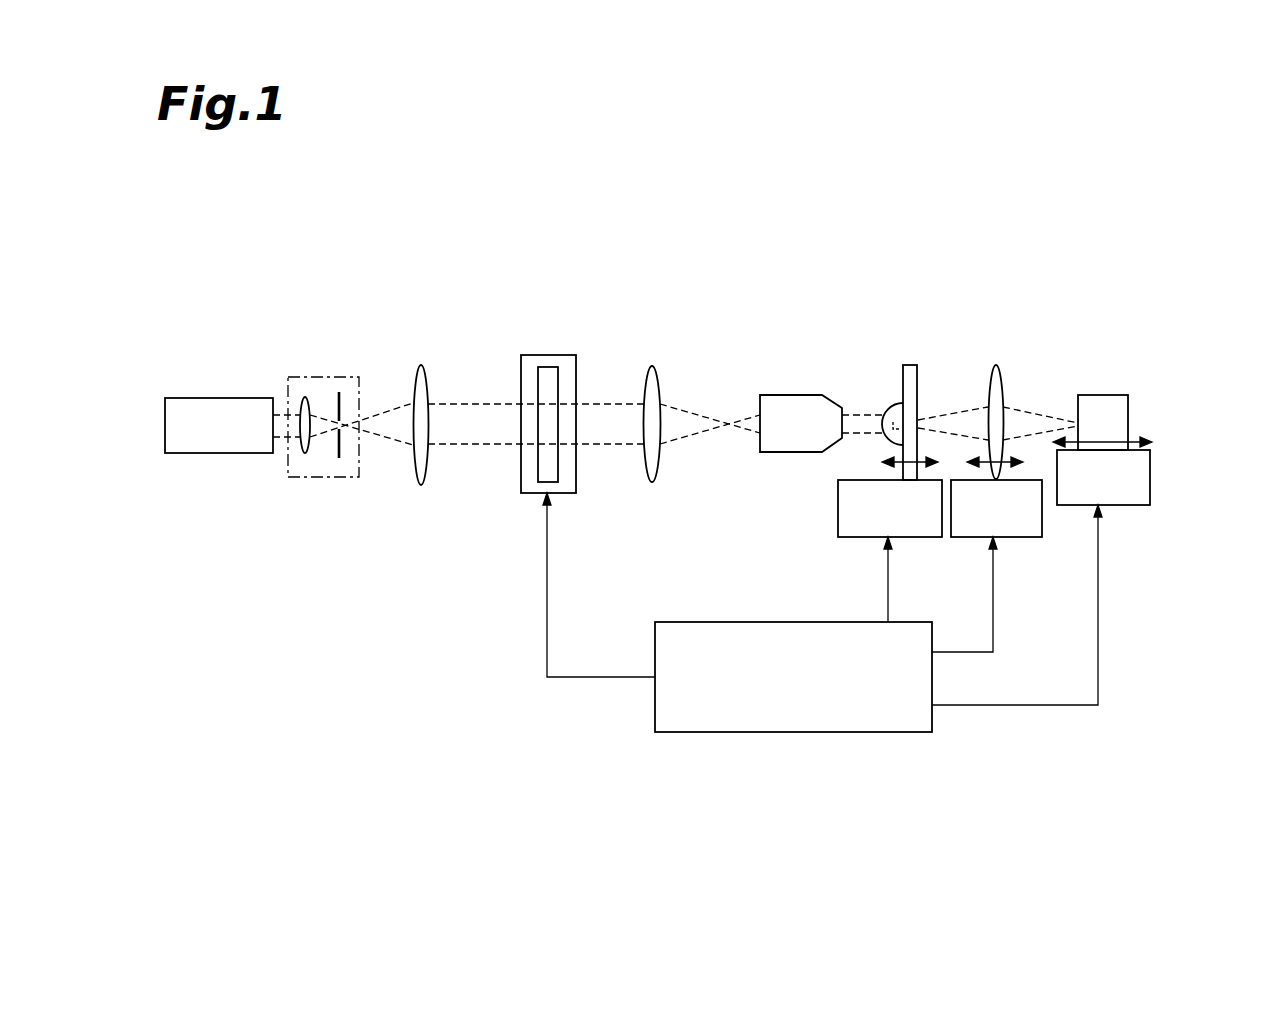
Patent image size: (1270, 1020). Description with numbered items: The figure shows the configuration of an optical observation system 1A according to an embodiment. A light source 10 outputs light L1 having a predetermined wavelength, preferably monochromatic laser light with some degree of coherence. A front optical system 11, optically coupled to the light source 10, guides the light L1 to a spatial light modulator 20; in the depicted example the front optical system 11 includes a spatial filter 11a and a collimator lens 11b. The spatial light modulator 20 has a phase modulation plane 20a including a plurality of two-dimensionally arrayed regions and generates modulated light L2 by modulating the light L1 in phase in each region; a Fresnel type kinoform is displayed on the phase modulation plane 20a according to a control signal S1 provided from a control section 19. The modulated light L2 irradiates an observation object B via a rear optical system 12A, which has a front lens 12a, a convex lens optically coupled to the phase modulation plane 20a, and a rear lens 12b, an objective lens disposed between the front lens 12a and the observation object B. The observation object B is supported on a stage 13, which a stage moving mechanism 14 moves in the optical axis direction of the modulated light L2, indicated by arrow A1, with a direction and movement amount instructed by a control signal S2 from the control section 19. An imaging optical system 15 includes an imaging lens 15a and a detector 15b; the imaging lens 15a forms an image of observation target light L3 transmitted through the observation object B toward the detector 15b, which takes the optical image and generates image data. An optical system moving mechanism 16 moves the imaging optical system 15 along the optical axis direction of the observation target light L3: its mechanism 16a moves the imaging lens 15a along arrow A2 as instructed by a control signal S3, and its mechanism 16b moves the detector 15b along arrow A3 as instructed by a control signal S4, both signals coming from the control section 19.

The optical observation system 1A is at (1058, 217).
The light source 10 is at (222, 453).
The front optical system 11 is at (358, 491).
The spatial filter 11a is at (327, 477).
The collimator lens 11b is at (421, 485).
The rear optical system 12A is at (743, 372).
The front lens 12a is at (656, 386).
The rear lens 12b is at (785, 395).
The stage 13 is at (915, 365).
The observation object B is at (893, 404).
The stage moving mechanism 14 is at (838, 522).
The imaging optical system 15 is at (1047, 403).
The imaging lens 15a is at (1000, 390).
The detector 15b is at (1110, 395).
The optical system moving mechanism 16 is at (1135, 551).
The mechanism for moving the imaging lens 16a is at (1033, 537).
The mechanism for moving the detector 16b is at (1135, 505).
The control section 19 is at (793, 735).
The spatial light modulator 20 is at (589, 397).
The phase modulation plane 20a is at (558, 472).
The light L1 is at (462, 403).
The modulated light L2 is at (610, 403).
The observation target light L3 is at (953, 412).
The arrow A1 is at (897, 465).
The arrow A2 is at (1002, 468).
The arrow A3 is at (1135, 437).
The control signal S1 is at (599, 585).
The control signal S2 is at (903, 579).
The control signal S3 is at (982, 595).
The control signal S4 is at (1034, 605).